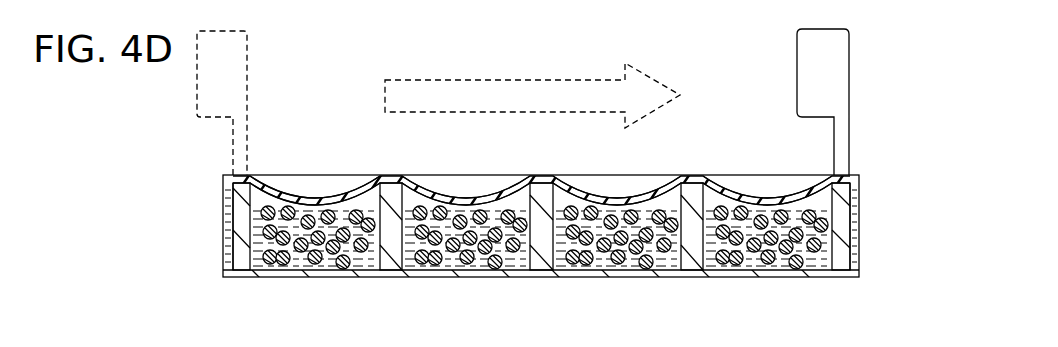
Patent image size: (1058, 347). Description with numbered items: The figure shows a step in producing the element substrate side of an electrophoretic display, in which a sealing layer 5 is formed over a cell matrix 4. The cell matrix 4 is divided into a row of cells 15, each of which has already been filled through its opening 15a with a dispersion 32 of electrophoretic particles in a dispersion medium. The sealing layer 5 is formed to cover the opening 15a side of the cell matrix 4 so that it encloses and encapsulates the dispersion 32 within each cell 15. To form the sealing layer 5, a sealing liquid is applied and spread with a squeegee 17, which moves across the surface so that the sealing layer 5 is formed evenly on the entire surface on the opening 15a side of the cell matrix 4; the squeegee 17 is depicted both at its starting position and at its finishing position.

The squeegee 17 is at (248, 78).
The cell 15 is at (310, 202).
The opening 15a is at (370, 194).
The sealing layer 5 is at (571, 180).
The dispersion 32 is at (662, 263).
The cell matrix 4 is at (693, 253).